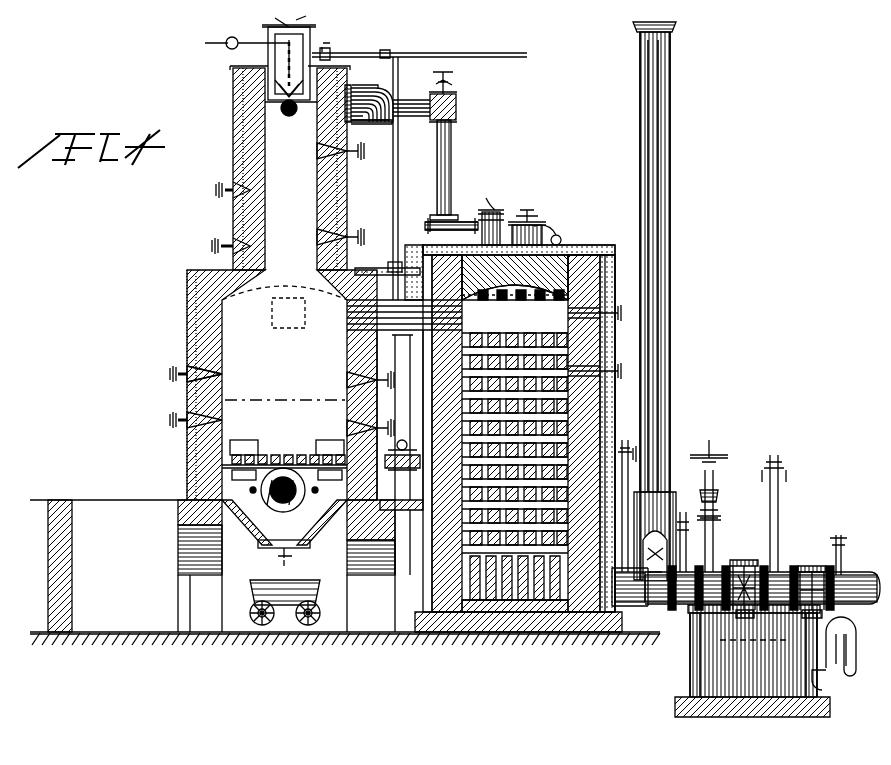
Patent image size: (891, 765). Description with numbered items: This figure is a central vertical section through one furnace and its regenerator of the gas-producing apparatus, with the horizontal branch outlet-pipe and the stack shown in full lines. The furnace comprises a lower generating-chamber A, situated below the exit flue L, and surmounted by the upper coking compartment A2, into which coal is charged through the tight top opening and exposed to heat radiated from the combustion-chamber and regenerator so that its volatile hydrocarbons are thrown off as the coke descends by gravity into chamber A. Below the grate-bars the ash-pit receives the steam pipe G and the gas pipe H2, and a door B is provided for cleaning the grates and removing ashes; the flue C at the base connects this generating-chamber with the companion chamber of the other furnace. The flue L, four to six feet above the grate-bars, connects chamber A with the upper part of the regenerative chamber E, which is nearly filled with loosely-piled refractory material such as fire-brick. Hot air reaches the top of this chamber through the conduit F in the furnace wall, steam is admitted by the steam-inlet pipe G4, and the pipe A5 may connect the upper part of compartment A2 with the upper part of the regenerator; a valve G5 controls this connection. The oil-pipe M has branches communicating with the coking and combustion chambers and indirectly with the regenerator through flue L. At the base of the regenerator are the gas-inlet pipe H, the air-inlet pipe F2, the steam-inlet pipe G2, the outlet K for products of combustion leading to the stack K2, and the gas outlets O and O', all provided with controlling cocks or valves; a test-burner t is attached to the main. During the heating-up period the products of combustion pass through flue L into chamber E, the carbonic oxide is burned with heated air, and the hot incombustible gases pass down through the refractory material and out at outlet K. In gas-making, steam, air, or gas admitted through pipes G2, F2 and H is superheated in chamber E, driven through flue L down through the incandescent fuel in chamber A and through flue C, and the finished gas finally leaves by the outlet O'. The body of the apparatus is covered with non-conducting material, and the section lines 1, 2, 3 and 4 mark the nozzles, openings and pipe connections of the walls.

The dashed section line in heating chamber 1 is at (186, 400).
The burner nozzles / twyers in furnace walls 2 is at (216, 190).
The hopper discharge opening 3 is at (265, 101).
The elbow pipe from retort to valve 4 is at (355, 78).
The generating-chamber A is at (282, 385).
The upper compartment A2 is at (277, 143).
The pipe A5 is at (451, 152).
The door B is at (291, 562).
The flue C is at (284, 512).
The regenerative chamber E is at (518, 438).
The hot-air-inlet conduit F is at (412, 388).
The air-inlet pipe F2 is at (650, 605).
The steam pipe G is at (298, 490).
The steam-inlet pipe G2 is at (684, 512).
The steam-inlet pipe G4 is at (460, 80).
The valve G5 is at (492, 210).
The gas-inlet pipe H is at (700, 520).
The gas pipe H2 is at (243, 489).
The outlet for products of combustion K is at (632, 570).
The chimney K2 is at (665, 301).
The flue L is at (400, 420).
The oil-pipe M is at (419, 167).
The outlet for gas O is at (765, 632).
The outlet to the gas-main O' is at (773, 536).
The test-burner t is at (845, 545).